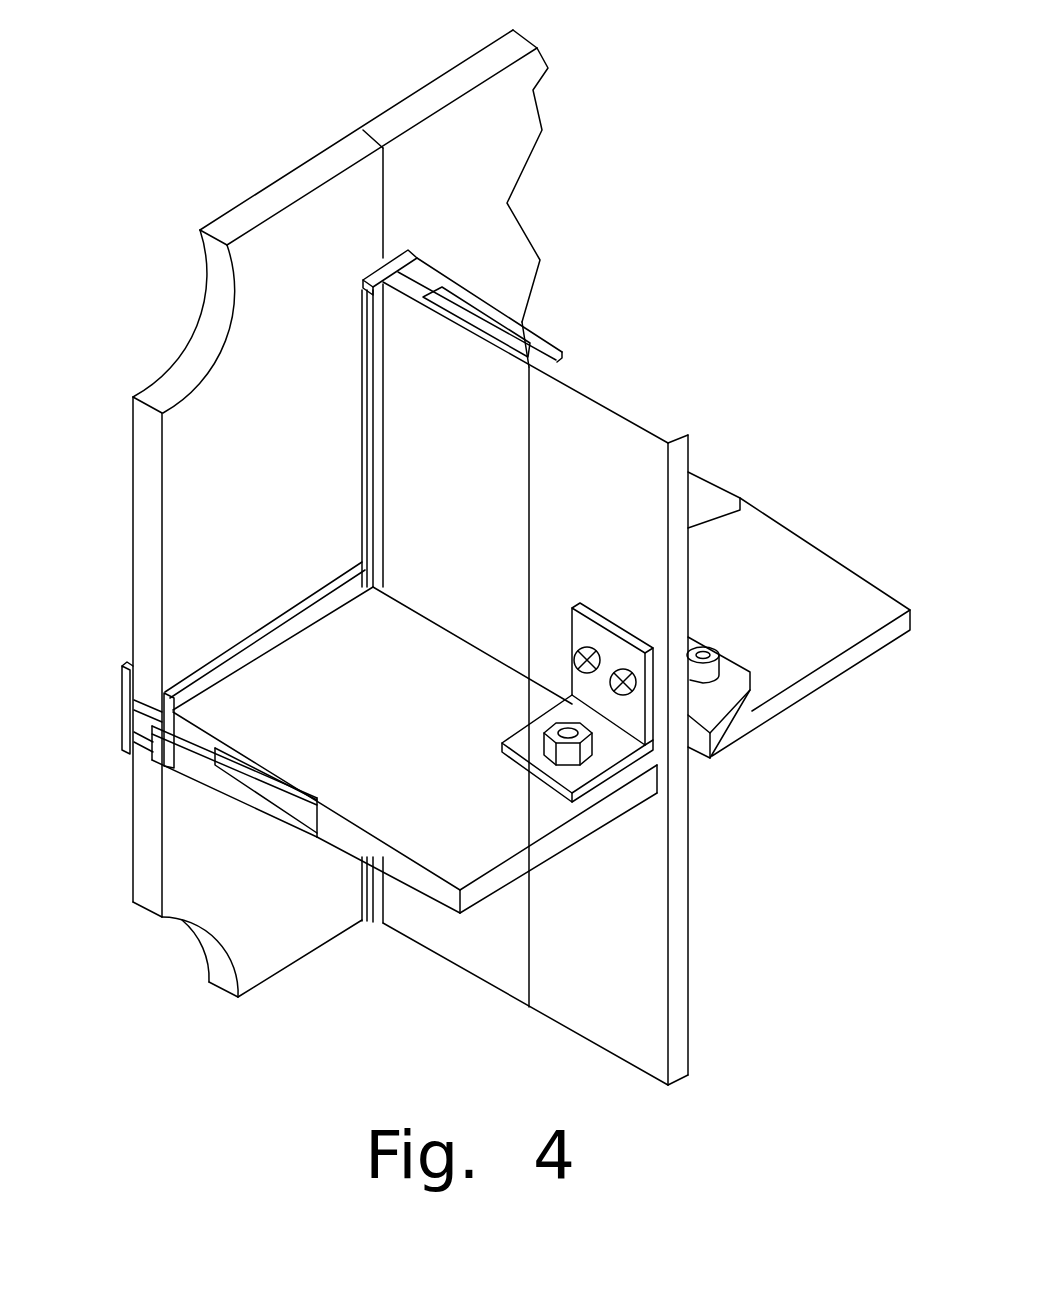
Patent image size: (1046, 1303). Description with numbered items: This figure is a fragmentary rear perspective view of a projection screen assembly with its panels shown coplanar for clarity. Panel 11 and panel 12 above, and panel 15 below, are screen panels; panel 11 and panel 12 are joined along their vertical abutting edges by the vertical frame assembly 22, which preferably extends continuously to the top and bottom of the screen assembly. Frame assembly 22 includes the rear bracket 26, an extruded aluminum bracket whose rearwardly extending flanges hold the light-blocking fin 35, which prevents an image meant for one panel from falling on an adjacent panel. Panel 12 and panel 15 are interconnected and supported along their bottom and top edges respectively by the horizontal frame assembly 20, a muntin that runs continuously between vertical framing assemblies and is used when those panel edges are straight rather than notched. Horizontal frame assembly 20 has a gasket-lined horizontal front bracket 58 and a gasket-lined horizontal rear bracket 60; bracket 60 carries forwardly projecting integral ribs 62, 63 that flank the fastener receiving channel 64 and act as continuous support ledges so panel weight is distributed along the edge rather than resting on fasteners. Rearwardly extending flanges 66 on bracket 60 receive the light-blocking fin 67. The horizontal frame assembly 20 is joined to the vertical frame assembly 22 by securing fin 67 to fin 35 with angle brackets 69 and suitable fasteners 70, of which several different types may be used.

The panel 11 is at (518, 112).
The panel 12 is at (285, 252).
The panel 15 is at (272, 950).
The horizontal frame assembly 20 is at (116, 688).
The frame assembly 22 is at (547, 333).
The rear bracket 26 is at (433, 263).
The fin 35 is at (626, 450).
The horizontal front bracket 58 is at (126, 708).
The horizontal rear bracket 60 is at (208, 772).
The rib 62 is at (157, 708).
The rib 63 is at (157, 743).
The fastener receiving channel 64 is at (182, 737).
The flange 66 is at (277, 818).
The fin 67 is at (457, 853).
The angle bracket 69 is at (727, 673).
The fastener 70 is at (592, 655).